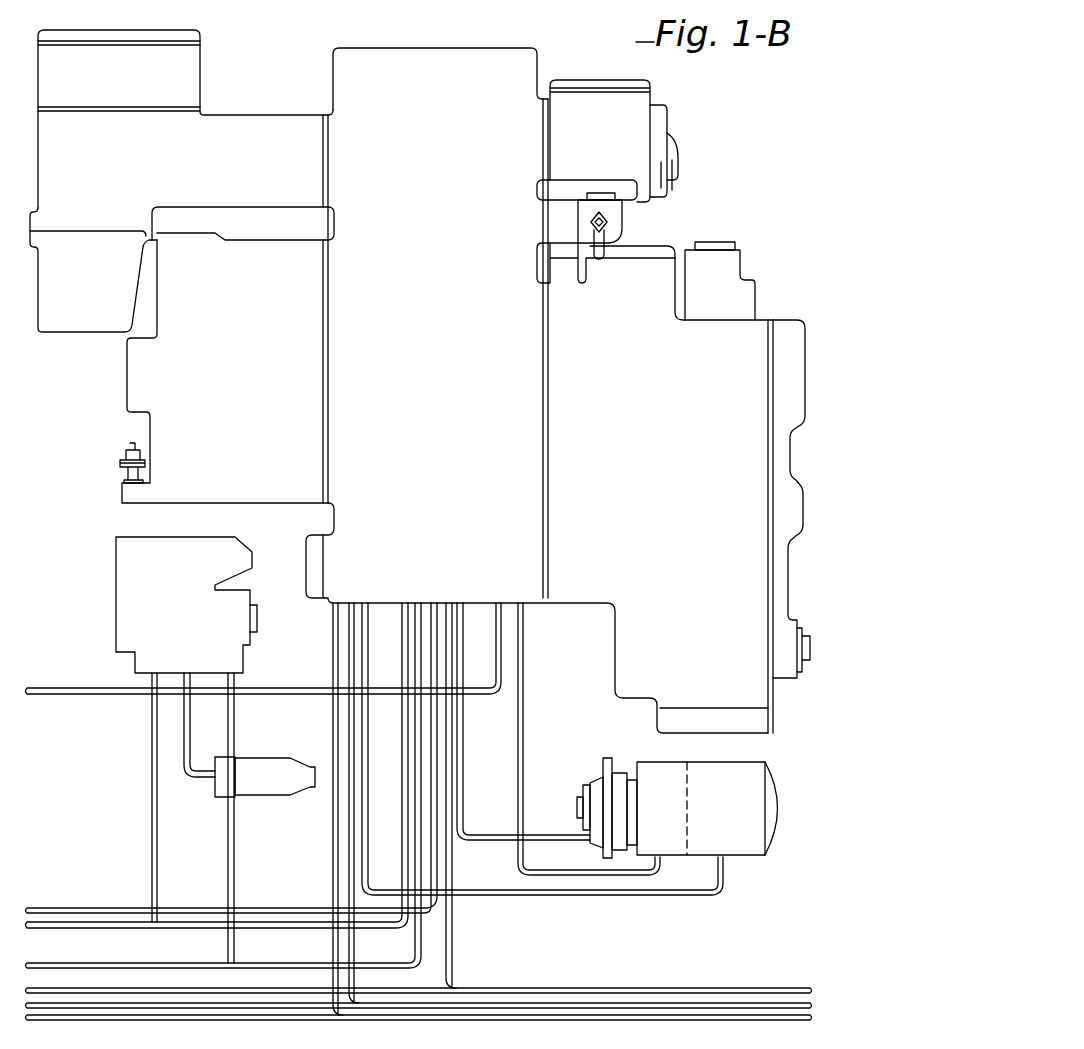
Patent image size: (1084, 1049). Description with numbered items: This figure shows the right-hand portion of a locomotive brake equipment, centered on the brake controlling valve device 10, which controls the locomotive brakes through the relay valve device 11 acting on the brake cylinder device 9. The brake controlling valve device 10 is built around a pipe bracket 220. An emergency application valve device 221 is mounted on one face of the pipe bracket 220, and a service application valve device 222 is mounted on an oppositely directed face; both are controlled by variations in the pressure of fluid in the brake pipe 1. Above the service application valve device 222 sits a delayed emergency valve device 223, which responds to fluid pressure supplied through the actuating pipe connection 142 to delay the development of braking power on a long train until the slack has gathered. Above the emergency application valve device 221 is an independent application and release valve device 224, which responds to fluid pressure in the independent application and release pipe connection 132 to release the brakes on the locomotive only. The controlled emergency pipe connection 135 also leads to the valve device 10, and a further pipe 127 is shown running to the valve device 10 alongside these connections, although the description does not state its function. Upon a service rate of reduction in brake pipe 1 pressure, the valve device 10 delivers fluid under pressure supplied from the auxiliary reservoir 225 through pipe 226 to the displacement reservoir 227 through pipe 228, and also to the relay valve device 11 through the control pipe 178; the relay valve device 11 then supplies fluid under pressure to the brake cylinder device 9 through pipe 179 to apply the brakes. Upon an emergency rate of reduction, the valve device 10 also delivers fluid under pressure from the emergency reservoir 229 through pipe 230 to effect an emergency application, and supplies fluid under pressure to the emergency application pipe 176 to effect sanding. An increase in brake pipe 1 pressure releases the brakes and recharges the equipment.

The brake controlling valve device 10 is at (555, 373).
The independent application and release valve device 224 is at (281, 93).
The emergency application valve device 221 is at (138, 367).
The pipe bracket 220 is at (515, 425).
The delayed emergency valve device 223 is at (640, 150).
The service application valve device 222 is at (640, 650).
The relay valve device 11 is at (116, 598).
The pipe 179 is at (185, 728).
The brake cylinder device 9 is at (258, 798).
The emergency application pipe 176 is at (310, 695).
The controlled emergency pipe connection 135 is at (102, 907).
The control pipe 178 is at (105, 928).
The conduit 127 is at (303, 968).
The brake pipe 1 is at (419, 826).
The independent application and release pipe connection 132 is at (182, 990).
The actuating pipe connection 142 is at (207, 1005).
The pipe 230 is at (710, 895).
The pipe 228 is at (465, 812).
The pipe 226 is at (520, 715).
The auxiliary reservoir 225 is at (600, 800).
The displacement reservoir 227 is at (600, 848).
The emergency reservoir 229 is at (726, 770).